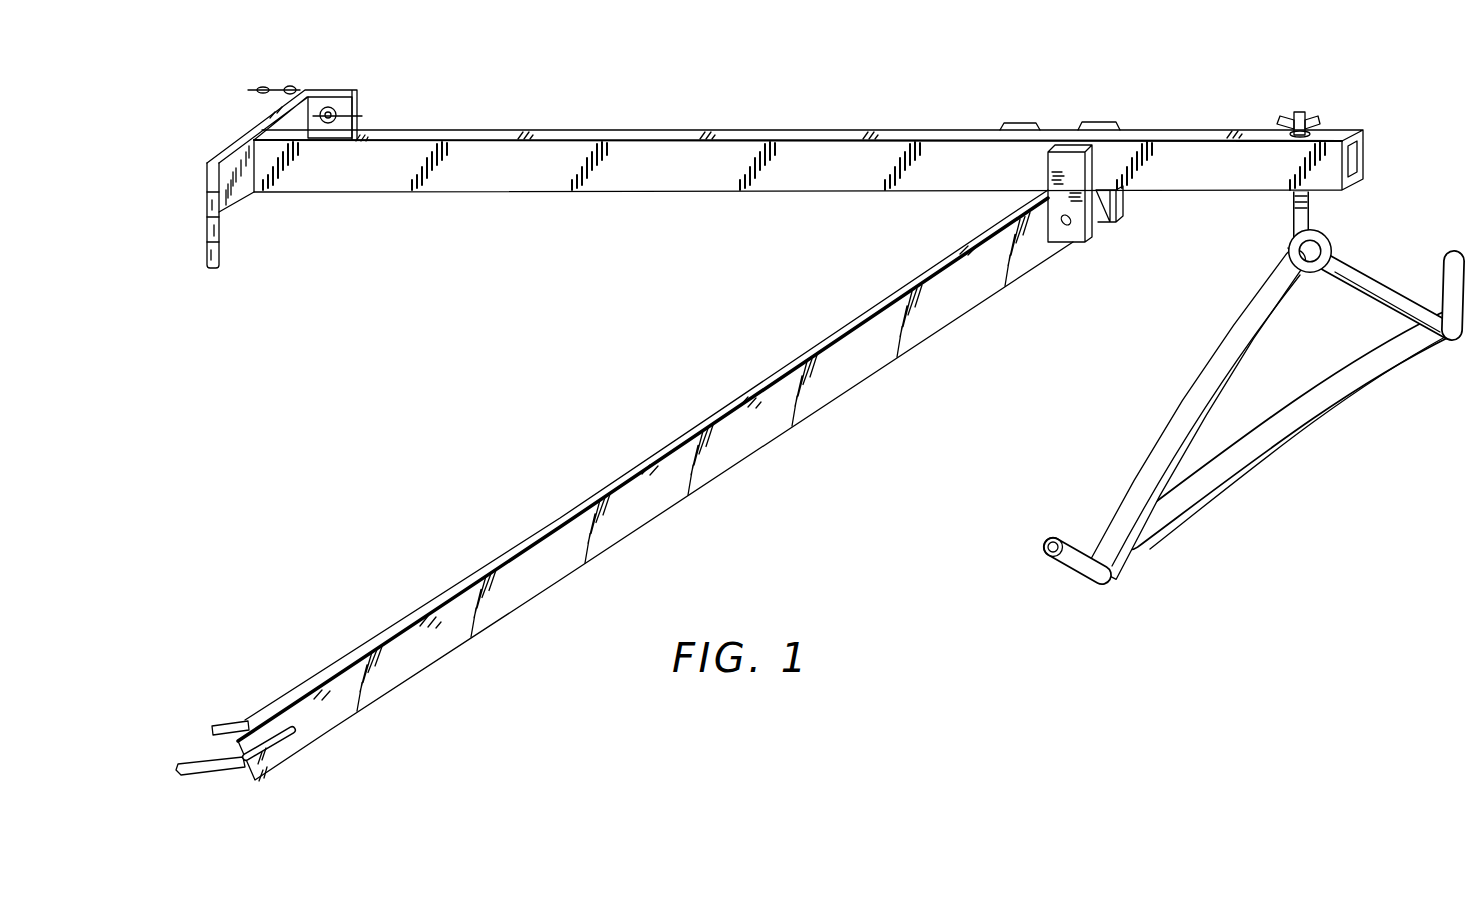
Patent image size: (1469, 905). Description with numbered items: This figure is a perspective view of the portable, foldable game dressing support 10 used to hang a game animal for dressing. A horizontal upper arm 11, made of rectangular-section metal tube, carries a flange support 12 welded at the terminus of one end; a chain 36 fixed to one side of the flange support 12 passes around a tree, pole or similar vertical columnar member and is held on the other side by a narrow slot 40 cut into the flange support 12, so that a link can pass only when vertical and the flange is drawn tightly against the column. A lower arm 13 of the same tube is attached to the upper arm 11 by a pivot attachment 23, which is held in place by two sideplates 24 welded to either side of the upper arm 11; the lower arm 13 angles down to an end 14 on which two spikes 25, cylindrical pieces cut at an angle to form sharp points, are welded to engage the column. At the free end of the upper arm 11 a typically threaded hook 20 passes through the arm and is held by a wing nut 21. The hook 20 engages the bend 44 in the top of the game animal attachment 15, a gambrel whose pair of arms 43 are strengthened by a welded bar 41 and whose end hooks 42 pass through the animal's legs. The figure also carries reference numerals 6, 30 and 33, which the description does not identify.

The game dressing support 10 is at (954, 59).
The upper arm 11 is at (568, 92).
The flange support 12 is at (223, 102).
The lower arm 13 is at (806, 479).
The end of lower arm tube 14 is at (194, 801).
The game animal attachment 15 is at (1058, 611).
The U-bolt clamp 6 is at (1018, 128).
The hook 20 is at (1308, 224).
The wing nut 21 is at (1318, 122).
The pivot attachment 23 is at (1068, 228).
The sideplates 24 is at (1047, 193).
The spikes 25 is at (235, 720).
The brace tube 30 is at (887, 370).
The clamp plate 33 is at (362, 116).
The chain 36 is at (297, 86).
The slot 40 is at (207, 194).
The bar 41 is at (1247, 470).
The hooks 42 is at (1454, 256).
The arms 43 is at (1378, 288).
The bend 44 is at (1290, 243).